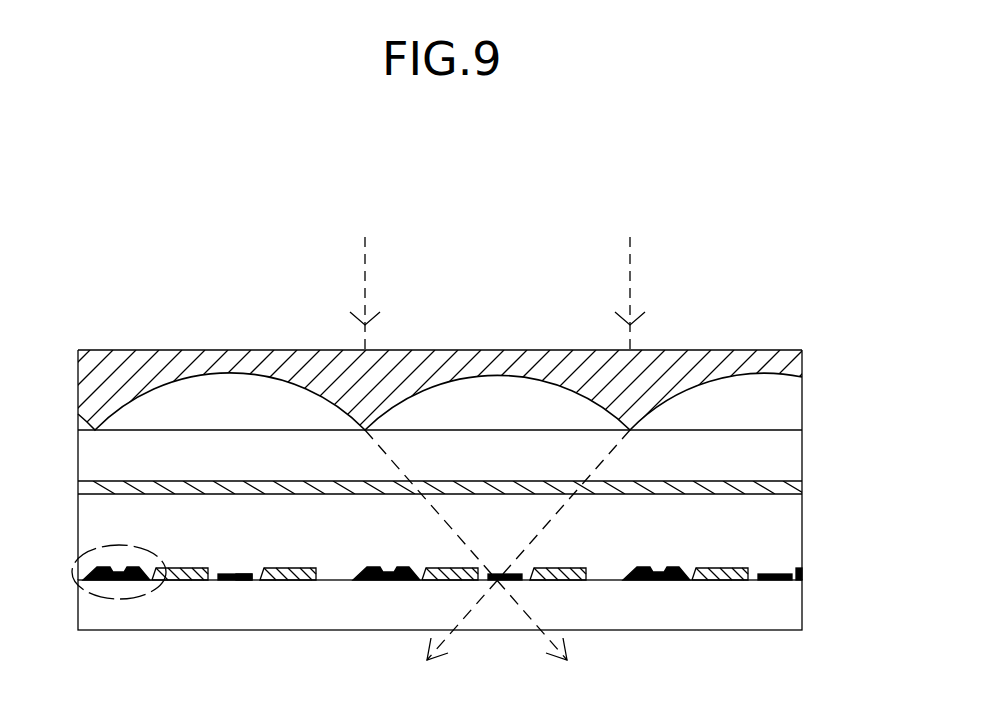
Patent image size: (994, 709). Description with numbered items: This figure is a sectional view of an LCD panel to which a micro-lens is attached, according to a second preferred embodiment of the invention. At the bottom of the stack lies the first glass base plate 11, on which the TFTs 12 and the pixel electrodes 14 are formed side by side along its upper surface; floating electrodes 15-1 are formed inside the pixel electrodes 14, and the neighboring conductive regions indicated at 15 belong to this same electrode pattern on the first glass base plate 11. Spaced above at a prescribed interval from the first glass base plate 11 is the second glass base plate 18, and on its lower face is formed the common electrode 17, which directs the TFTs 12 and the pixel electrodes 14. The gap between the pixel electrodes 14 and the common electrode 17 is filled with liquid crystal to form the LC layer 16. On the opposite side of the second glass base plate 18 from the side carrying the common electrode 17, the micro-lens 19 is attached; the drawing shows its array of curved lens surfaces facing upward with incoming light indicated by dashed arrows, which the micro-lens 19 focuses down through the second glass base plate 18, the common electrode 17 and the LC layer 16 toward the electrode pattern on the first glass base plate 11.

The first glass base plate 11 is at (103, 623).
The TFT 12 is at (120, 600).
The pixel electrode 14 is at (190, 580).
The wiring (light shielding) layer 15 is at (215, 580).
The floating electrode 15-1 is at (248, 580).
The LC layer 16 is at (783, 521).
The common electrode 17 is at (790, 484).
The second glass base plate 18 is at (783, 455).
The micro-lens 19 is at (785, 389).